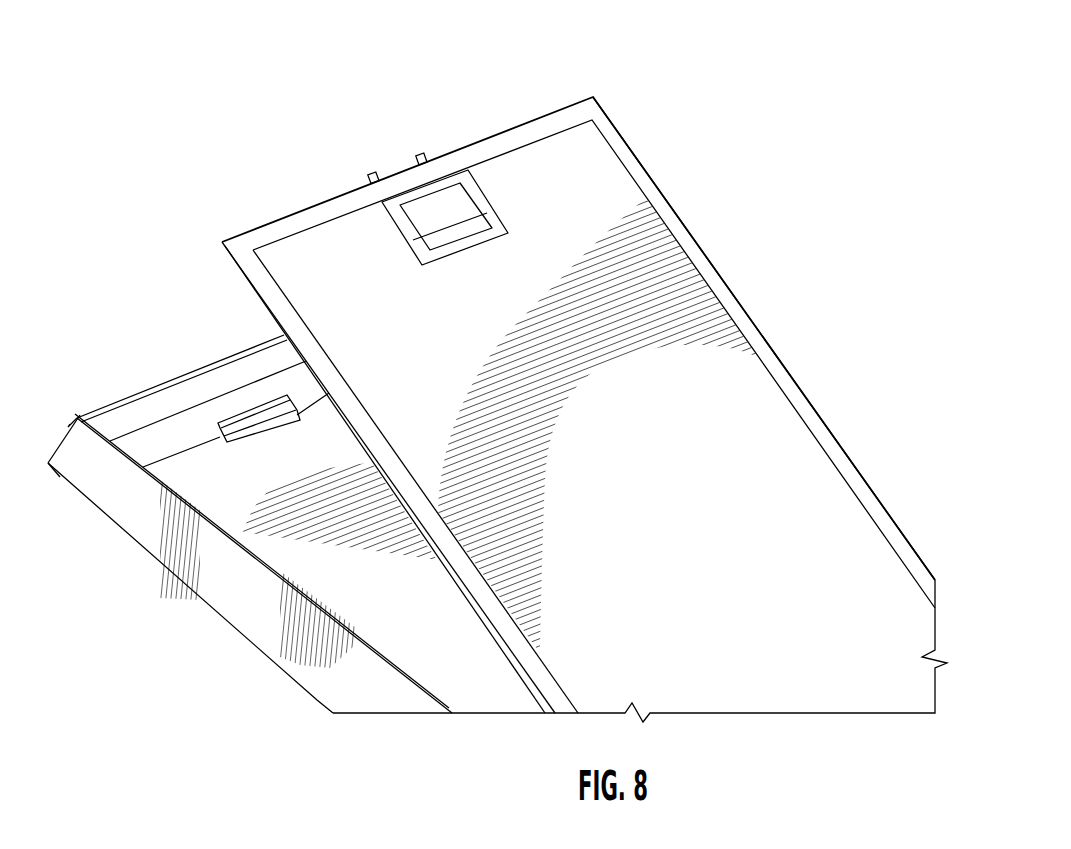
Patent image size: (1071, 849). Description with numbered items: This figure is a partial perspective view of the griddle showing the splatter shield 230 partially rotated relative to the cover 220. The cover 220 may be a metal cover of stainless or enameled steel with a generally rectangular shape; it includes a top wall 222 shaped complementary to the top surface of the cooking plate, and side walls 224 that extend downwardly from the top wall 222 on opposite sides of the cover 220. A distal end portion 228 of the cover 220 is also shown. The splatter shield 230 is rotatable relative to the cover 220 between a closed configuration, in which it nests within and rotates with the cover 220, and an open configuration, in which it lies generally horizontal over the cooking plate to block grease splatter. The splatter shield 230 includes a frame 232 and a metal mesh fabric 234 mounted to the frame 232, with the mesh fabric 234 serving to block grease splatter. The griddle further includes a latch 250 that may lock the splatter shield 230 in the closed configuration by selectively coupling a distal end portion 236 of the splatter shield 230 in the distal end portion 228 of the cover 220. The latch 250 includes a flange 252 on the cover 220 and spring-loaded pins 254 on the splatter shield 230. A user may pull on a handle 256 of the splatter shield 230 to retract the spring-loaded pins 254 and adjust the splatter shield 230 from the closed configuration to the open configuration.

The cover 220 is at (317, 702).
The top wall 222 is at (327, 580).
The side walls 224 is at (113, 518).
The distal end portion 228 is at (50, 484).
The splatter shield 230 is at (852, 460).
The frame 232 is at (518, 645).
The mesh fabric 234 is at (752, 410).
The distal end portion 236 is at (596, 93).
The latch 250 is at (433, 126).
The flange 252 is at (218, 423).
The spring-loaded pins 254 is at (421, 153).
The handle 256 is at (476, 220).